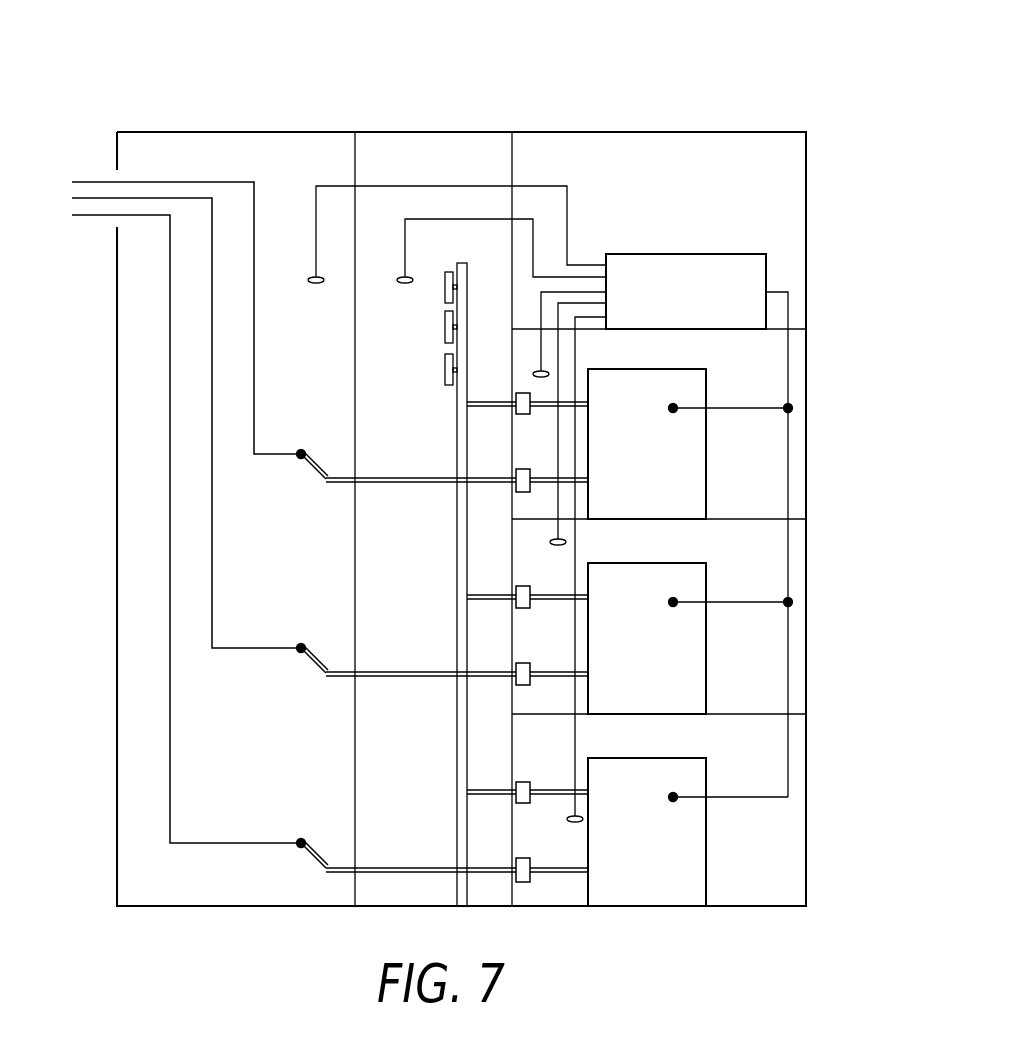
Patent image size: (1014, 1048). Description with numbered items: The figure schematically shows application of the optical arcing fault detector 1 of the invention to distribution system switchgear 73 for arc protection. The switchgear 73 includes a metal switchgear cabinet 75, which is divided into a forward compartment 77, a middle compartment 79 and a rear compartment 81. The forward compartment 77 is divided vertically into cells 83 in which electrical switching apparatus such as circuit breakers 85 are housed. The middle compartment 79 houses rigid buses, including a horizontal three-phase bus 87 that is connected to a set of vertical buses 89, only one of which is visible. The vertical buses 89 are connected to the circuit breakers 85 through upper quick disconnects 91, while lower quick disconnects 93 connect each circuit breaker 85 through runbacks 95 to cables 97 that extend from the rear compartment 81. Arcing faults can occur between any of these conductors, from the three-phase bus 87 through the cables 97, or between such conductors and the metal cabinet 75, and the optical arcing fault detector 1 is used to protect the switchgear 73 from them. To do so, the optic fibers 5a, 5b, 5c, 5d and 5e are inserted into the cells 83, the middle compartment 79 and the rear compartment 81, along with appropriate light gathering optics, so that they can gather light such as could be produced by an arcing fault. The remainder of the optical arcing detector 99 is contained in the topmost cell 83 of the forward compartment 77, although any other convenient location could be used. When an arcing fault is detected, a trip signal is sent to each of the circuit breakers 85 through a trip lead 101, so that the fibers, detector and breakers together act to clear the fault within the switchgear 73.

The optical arcing fault detector 1 is at (598, 210).
The optic fiber 5a is at (533, 303).
The optic fiber 5b is at (560, 338).
The optic fiber 5c is at (576, 743).
The optic fiber 5d is at (434, 218).
The optic fiber 5e is at (452, 186).
The switchgear 73 is at (509, 88).
The metal switchgear cabinet 75 is at (645, 123).
The forward compartment 77 is at (797, 195).
The middle compartment 79 is at (377, 138).
The rear compartment 81 is at (237, 147).
The cell 83 is at (797, 232).
The circuit breaker 85 is at (700, 504).
The horizontal three-phase bus 87 is at (427, 322).
The vertical bus 89 is at (457, 433).
The upper quick disconnect 91 is at (520, 392).
The lower quick disconnect 93 is at (527, 473).
The runback 95 is at (373, 477).
The cable 97 is at (254, 357).
The remainder of the optical arcing detector 99 is at (713, 262).
The trip lead 101 is at (790, 377).